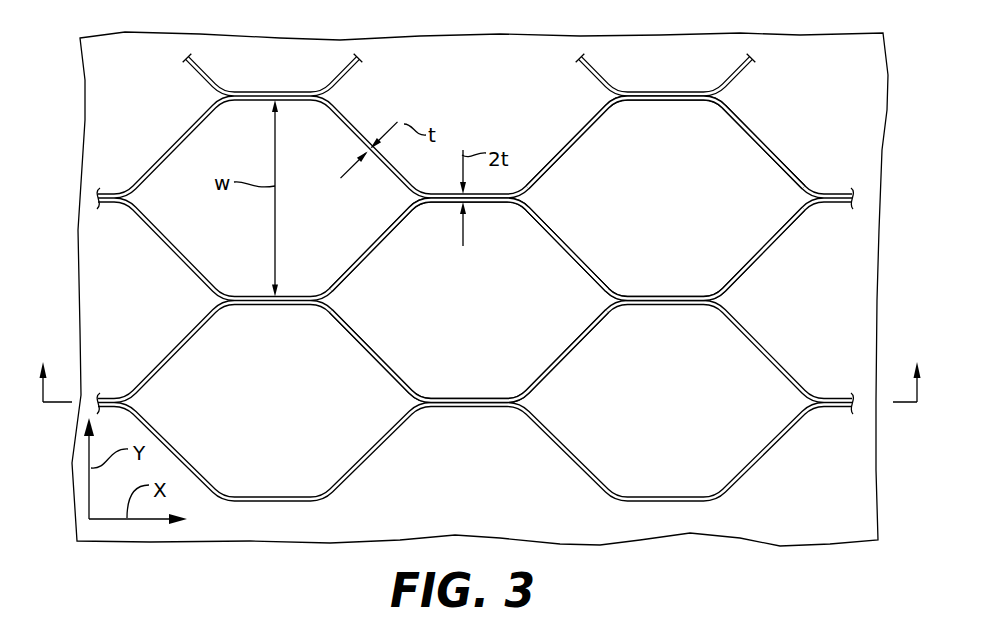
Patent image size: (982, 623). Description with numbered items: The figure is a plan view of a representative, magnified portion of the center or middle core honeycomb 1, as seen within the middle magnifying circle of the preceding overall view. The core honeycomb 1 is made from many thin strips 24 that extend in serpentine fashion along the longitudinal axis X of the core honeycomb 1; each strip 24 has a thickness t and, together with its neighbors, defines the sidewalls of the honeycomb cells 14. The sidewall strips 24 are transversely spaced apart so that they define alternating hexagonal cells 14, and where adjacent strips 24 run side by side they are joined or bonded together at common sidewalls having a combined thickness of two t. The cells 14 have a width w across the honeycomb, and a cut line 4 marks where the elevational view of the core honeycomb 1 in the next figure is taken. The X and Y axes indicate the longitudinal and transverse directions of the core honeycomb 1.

The core honeycomb 1 is at (781, 89).
The strips 24 is at (791, 166).
The honeycomb cells 14 is at (486, 312).
The cut line 4- 4 is at (480, 370).